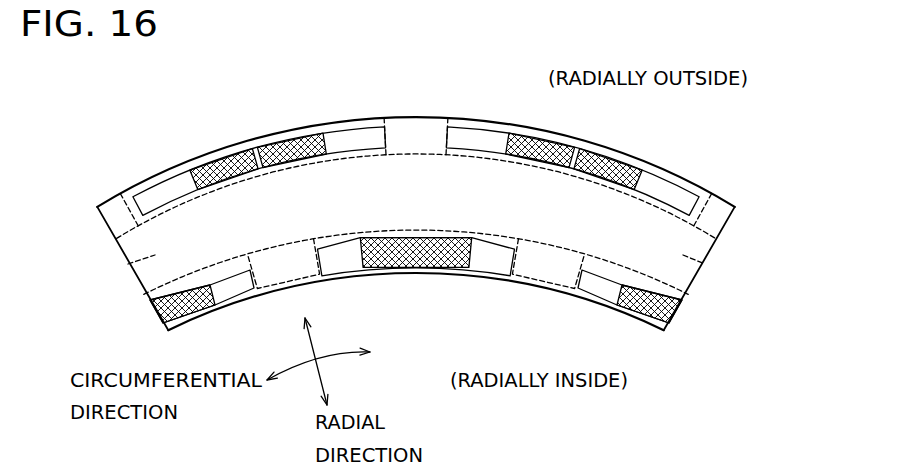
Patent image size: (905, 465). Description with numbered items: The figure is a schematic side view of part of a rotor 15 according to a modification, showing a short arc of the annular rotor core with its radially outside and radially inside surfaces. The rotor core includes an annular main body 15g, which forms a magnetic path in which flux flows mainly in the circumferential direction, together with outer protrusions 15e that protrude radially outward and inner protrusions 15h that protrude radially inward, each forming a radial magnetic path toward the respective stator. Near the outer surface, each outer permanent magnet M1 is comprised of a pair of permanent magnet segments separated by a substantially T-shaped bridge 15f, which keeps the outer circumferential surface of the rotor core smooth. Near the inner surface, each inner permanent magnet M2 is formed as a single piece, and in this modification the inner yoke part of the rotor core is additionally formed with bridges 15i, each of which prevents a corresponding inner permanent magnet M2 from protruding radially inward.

The rotor 15 is at (238, 125).
The outer protrusion 15e is at (122, 212).
The bridge 15f is at (275, 133).
The main body 15g is at (133, 262).
The inner protrusion 15h is at (290, 284).
The bridge 15i is at (380, 268).
The outer permanent magnet M1 is at (279, 156).
The inner permanent magnet M2 is at (415, 250).